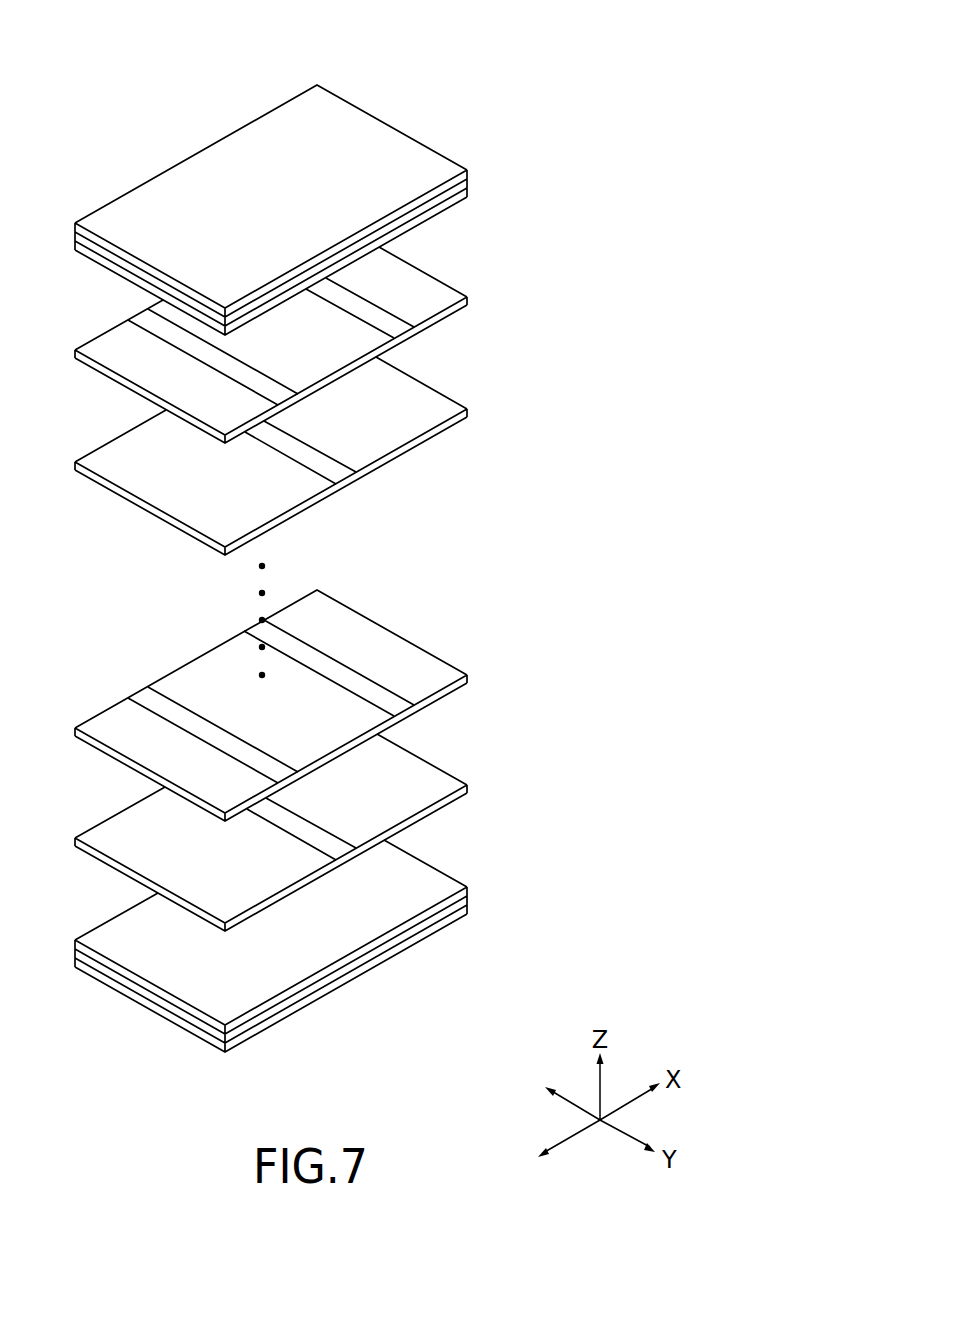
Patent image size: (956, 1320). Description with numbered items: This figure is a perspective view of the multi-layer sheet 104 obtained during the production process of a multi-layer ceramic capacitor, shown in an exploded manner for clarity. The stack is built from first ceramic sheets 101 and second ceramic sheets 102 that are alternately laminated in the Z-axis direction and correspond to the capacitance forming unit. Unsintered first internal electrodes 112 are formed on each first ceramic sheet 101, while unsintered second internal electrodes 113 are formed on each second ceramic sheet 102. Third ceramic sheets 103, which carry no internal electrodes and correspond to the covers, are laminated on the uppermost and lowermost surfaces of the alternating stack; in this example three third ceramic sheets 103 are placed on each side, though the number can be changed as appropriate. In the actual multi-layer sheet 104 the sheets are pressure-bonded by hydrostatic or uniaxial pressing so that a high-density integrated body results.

The first ceramic sheet 101 is at (487, 288).
The second ceramic sheet 102 is at (487, 400).
The third ceramic sheet 103 is at (487, 178).
The multi-layer sheet 104 is at (428, 85).
The unsintered first internal electrode 112 is at (106, 335).
The unsintered second internal electrode 113 is at (106, 455).